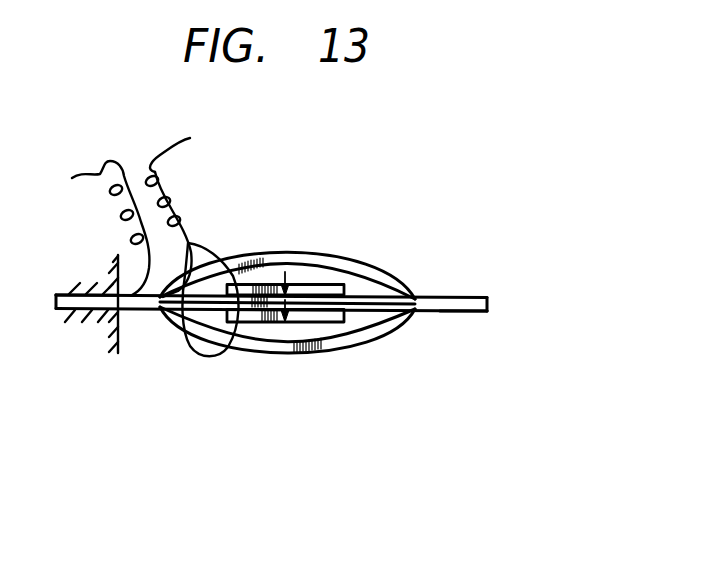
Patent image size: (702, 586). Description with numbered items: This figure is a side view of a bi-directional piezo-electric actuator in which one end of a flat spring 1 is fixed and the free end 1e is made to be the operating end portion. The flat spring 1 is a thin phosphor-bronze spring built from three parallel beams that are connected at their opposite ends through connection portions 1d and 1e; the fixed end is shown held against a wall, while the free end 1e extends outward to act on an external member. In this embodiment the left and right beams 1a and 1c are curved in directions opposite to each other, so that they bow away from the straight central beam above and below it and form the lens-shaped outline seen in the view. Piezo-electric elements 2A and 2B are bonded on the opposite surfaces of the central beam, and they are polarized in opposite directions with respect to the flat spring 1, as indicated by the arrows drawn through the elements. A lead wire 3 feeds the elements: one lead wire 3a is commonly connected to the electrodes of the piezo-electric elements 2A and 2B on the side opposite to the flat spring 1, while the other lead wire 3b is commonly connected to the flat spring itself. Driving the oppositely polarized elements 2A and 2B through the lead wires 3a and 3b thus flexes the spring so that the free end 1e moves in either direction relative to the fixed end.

The flat spring 1 is at (445, 290).
The beam 1a is at (293, 263).
The beam 1c is at (278, 344).
The connection portion 1d is at (73, 312).
The connection portion 1e is at (467, 307).
The piezo-electric element 2A is at (324, 288).
The piezo-electric element 2B is at (318, 327).
The lead wire 3 is at (180, 195).
The lead wire 3a is at (183, 147).
The lead wire 3b is at (92, 228).